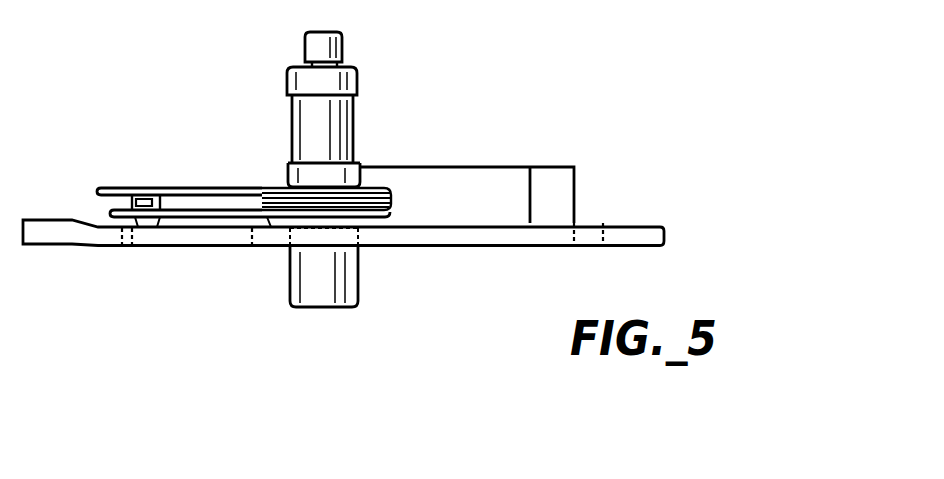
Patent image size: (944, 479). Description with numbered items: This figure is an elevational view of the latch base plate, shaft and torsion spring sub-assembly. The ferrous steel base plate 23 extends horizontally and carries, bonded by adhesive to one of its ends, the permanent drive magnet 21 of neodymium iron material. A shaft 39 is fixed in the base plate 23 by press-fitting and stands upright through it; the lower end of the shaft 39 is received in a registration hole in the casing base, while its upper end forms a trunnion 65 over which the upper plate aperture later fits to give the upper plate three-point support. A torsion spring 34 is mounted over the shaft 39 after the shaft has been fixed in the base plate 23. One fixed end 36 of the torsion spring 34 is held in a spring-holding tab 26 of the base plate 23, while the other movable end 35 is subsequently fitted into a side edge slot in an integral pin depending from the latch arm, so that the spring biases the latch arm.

The drive magnet 21 is at (477, 182).
The base plate 23 is at (628, 227).
The spring-holding tab 26 is at (132, 203).
The torsion spring 34 is at (381, 186).
The movable end 35 is at (183, 186).
The fixed end 36 is at (202, 217).
The shaft 39 is at (352, 127).
The trunnion 65 is at (342, 45).